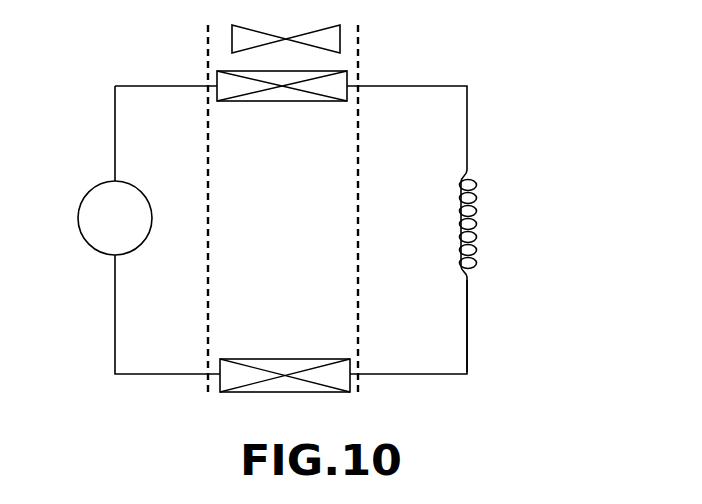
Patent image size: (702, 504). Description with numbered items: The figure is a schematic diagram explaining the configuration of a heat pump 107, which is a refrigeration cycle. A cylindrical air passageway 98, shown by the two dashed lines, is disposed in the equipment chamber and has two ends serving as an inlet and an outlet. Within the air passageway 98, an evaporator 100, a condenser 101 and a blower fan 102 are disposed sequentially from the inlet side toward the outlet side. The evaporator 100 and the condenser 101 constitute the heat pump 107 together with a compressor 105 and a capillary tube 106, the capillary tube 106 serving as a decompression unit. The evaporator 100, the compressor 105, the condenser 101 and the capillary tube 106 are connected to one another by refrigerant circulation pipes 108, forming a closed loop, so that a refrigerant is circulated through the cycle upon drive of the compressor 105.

The air passageway 98 is at (358, 332).
The evaporator 100 is at (218, 379).
The condenser 101 is at (347, 73).
The blower fan 102 is at (340, 35).
The compressor 105 is at (82, 200).
The capillary tube 106 is at (477, 180).
The heat pump 107 is at (478, 107).
The refrigerant circulation pipes 108 is at (468, 328).